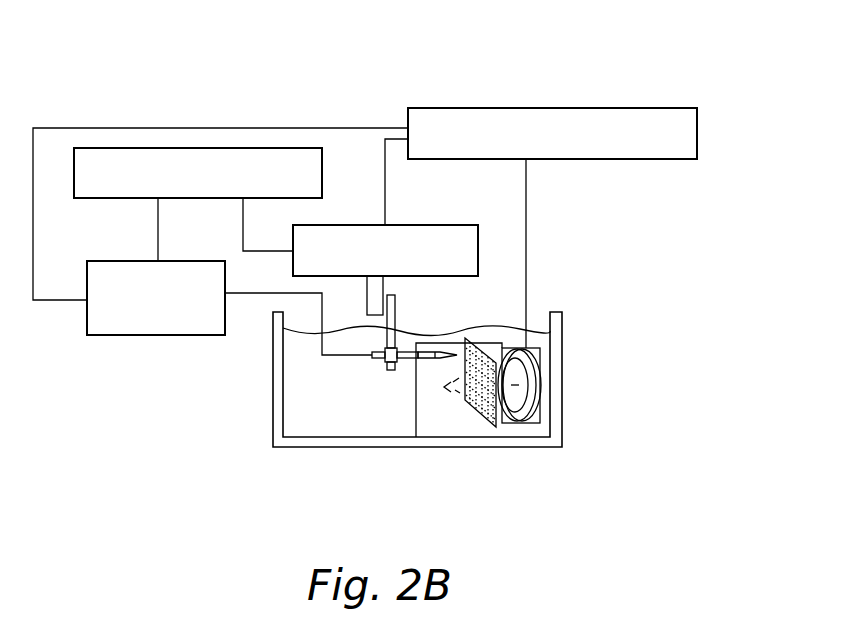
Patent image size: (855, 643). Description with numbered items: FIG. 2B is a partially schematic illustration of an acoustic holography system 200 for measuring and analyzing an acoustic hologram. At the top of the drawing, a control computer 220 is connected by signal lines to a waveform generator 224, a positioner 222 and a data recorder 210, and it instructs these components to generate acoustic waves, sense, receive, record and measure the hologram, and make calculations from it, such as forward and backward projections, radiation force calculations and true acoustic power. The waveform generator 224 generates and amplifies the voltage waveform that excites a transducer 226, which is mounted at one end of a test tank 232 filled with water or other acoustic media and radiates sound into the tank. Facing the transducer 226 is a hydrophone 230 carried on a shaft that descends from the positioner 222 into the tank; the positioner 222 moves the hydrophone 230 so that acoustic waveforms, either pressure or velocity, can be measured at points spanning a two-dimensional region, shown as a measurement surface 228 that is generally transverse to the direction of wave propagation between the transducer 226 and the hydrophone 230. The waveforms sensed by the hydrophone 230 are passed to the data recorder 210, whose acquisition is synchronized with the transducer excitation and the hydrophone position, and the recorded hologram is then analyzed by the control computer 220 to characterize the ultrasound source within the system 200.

The acoustic holography system 200 is at (703, 78).
The data recorder 210 is at (85, 315).
The control computer 220 is at (193, 148).
The positioner 222 is at (417, 225).
The waveform generator 224 is at (558, 108).
The transducer 226 is at (522, 415).
The measurement surface 228 is at (471, 413).
The hydrophone 230 is at (426, 366).
The test tank 232 is at (274, 412).